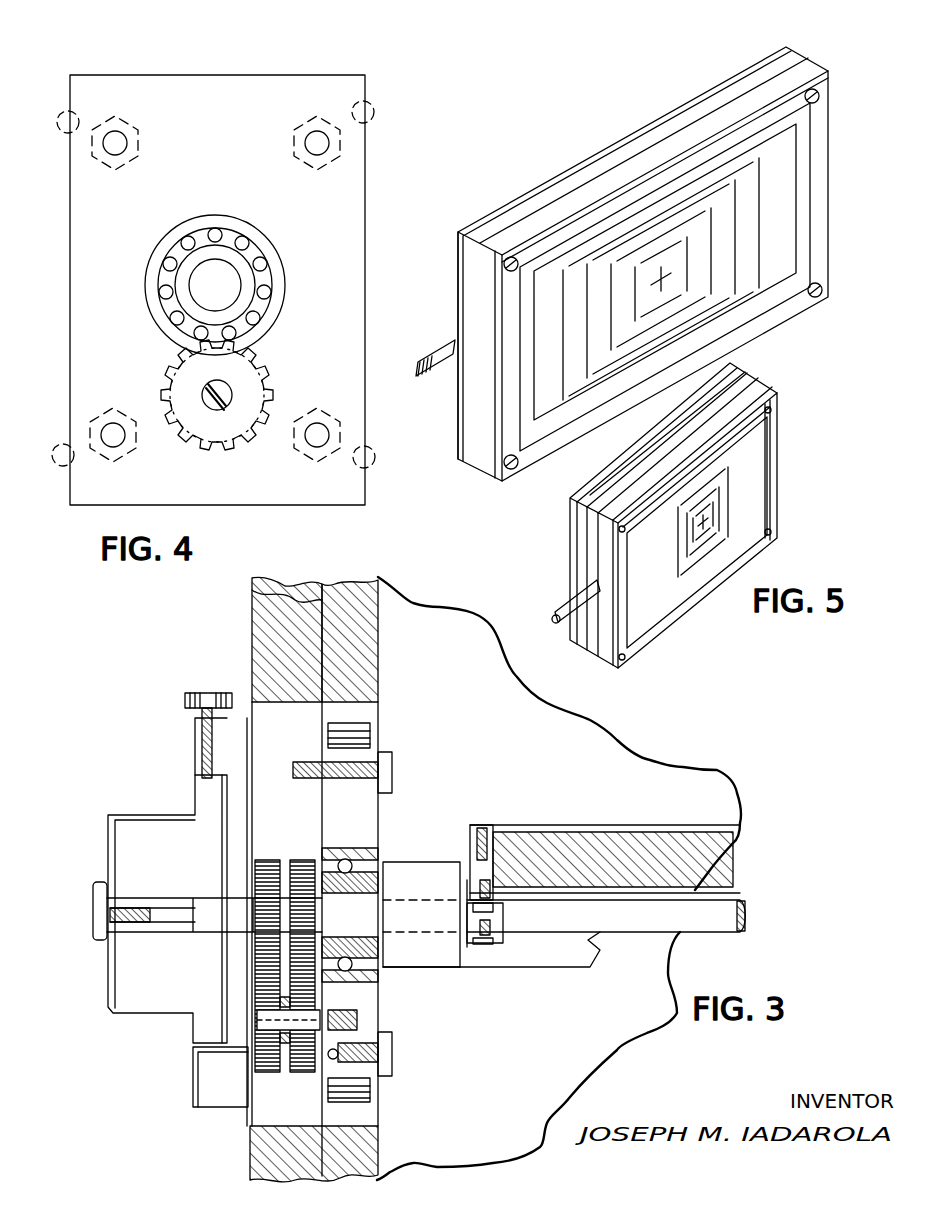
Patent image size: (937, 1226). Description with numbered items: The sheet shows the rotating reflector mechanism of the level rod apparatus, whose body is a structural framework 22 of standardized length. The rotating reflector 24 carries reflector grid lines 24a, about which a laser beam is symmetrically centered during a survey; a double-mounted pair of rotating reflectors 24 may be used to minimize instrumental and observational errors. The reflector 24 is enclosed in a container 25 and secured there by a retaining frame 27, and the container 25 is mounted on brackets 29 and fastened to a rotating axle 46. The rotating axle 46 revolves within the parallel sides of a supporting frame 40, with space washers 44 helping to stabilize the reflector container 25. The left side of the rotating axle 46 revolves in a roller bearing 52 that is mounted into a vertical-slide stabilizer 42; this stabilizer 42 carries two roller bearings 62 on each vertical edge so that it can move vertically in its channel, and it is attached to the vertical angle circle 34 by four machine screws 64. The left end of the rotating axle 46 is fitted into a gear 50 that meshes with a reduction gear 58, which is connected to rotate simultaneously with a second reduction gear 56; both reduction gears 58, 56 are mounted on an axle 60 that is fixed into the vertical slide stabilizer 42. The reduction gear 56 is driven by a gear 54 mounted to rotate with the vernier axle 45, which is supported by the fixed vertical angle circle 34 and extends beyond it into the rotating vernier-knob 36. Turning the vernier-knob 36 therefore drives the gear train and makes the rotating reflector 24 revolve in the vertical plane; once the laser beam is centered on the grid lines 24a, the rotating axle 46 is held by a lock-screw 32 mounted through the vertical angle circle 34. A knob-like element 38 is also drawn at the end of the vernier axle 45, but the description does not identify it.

In FIG. 3, the structural framework 22 is at (285, 647).
In FIG. 5, the rotating reflector 24 is at (762, 152).
In FIG. 3, the rotating reflector 24 is at (663, 847).
In FIG. 5, the reflector grid lines 24a is at (668, 282).
In FIG. 5, the container 25 is at (675, 132).
In FIG. 3, the container 25 is at (588, 890).
In FIG. 5, the retaining frame 27 is at (626, 198).
In FIG. 3, the retaining frame 27 is at (537, 825).
In FIG. 5, the brackets 29 is at (460, 267).
In FIG. 3, the lock-screw 32 is at (200, 700).
In FIG. 3, the vertical angle circle 34 is at (242, 762).
In FIG. 3, the vernier-knob 36 is at (195, 848).
In FIG. 3, the knob 38 is at (100, 885).
In FIG. 3, the supporting frame 40 is at (552, 952).
In FIG. 4, the vertical-slide stabilizer 42 is at (202, 100).
In FIG. 3, the vertical-slide stabilizer 42 is at (362, 717).
In FIG. 3, the space washers 44 is at (385, 870).
In FIG. 3, the vernier axle 45 is at (220, 908).
In FIG. 5, the rotating axle 46 is at (445, 383).
In FIG. 3, the rotating axle 46 is at (390, 905).
In FIG. 3, the gear 50 is at (305, 948).
In FIG. 4, the roller bearing 52 is at (262, 262).
In FIG. 3, the roller bearing 52 is at (355, 965).
In FIG. 3, the gear 54 is at (270, 950).
In FIG. 4, the reduction gear 56 is at (250, 350).
In FIG. 3, the reduction gear 56 is at (270, 1050).
In FIG. 4, the reduction gear 58 is at (226, 370).
In FIG. 3, the reduction gear 58 is at (305, 1000).
In FIG. 4, the axle 60 is at (222, 390).
In FIG. 3, the axle 60 is at (272, 1023).
In FIG. 4, the roller bearings 62 is at (76, 125).
In FIG. 3, the roller bearings 62 is at (348, 737).
In FIG. 4, the machine screws 64 is at (113, 143).
In FIG. 3, the machine screws 64 is at (380, 773).